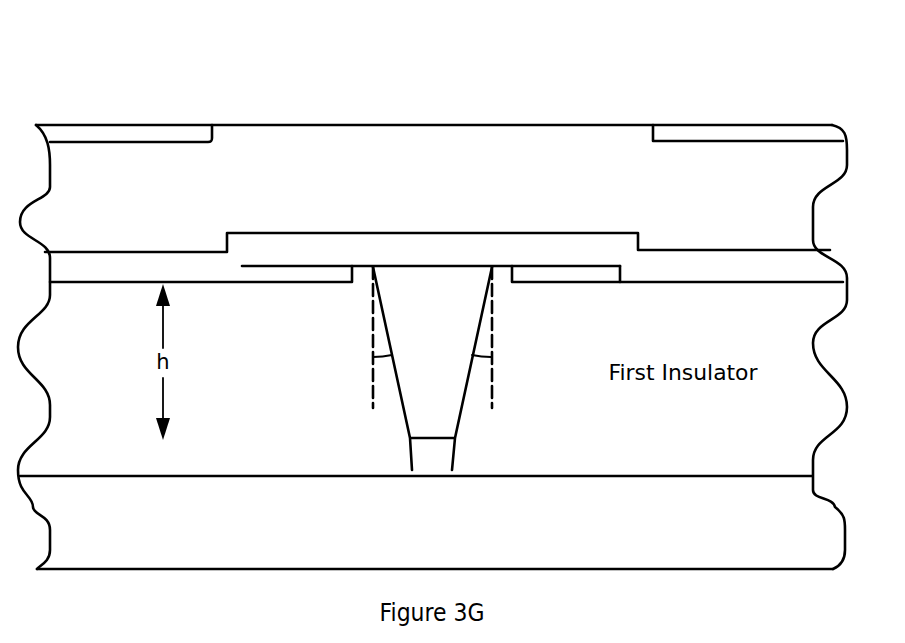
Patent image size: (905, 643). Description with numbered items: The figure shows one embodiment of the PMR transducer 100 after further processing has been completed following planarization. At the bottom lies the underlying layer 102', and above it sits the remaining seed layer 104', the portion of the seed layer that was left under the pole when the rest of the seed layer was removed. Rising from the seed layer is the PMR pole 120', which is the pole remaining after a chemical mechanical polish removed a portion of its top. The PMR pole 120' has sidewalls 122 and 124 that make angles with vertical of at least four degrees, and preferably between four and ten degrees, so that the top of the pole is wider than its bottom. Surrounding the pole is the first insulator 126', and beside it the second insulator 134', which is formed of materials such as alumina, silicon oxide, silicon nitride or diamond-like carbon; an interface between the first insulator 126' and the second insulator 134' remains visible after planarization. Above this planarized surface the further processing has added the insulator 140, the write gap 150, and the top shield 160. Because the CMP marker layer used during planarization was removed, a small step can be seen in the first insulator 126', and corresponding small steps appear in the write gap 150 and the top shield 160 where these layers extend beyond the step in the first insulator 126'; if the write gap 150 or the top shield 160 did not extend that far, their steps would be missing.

The PMR transducer 100 is at (413, 84).
The underlying layer 102' is at (416, 539).
The remaining seed layer 104' is at (347, 526).
The PMR pole 120' is at (309, 435).
The sidewall 122 is at (406, 417).
The sidewall 124 is at (459, 418).
The first insulator 126' is at (760, 188).
The second insulator 134' is at (446, 182).
The insulator 140 is at (131, 124).
The write gap 150 is at (313, 233).
The top shield 160 is at (447, 123).